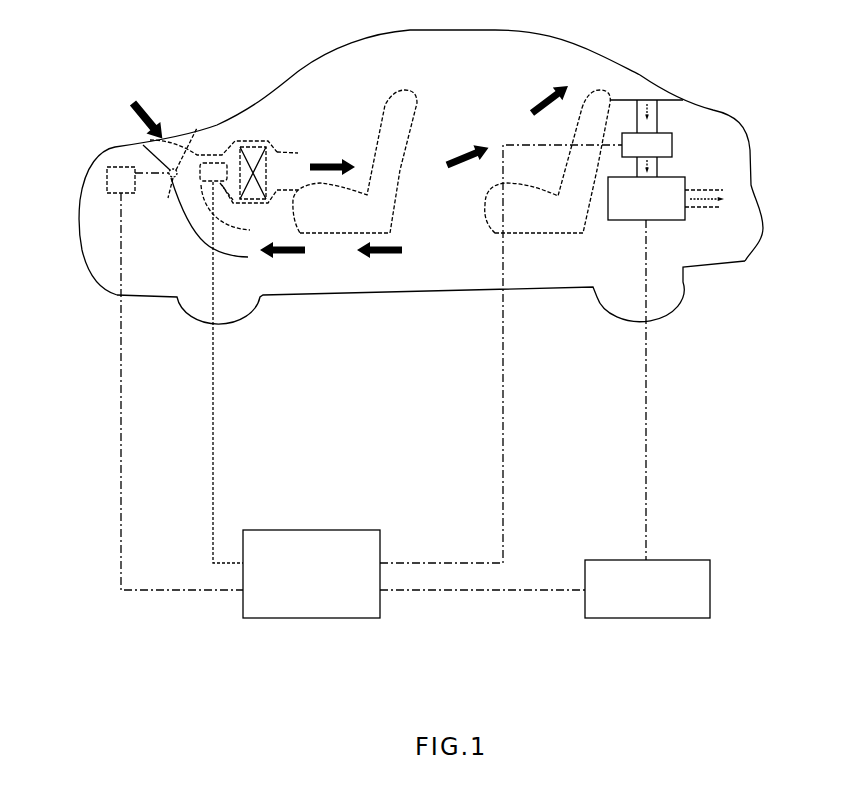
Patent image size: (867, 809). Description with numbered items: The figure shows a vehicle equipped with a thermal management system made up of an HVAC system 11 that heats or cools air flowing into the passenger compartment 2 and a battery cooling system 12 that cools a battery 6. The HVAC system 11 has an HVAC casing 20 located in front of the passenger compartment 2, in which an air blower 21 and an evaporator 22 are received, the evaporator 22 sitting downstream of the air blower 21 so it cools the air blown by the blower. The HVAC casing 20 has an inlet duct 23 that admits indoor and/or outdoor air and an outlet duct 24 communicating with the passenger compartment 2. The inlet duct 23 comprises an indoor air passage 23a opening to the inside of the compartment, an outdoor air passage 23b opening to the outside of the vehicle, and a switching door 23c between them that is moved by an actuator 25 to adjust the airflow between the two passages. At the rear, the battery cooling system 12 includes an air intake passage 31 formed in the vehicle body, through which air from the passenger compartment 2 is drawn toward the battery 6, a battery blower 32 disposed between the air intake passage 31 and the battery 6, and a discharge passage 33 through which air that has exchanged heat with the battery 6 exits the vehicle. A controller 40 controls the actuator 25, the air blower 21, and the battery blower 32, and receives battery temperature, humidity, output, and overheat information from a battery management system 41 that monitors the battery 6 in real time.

The passenger compartment 2 is at (463, 206).
The battery 6 is at (685, 178).
The HVAC system 11 is at (218, 124).
The battery cooling system 12 is at (686, 90).
The HVAC casing 20 is at (266, 141).
The air blower 21 is at (216, 162).
The evaporator 22 is at (262, 139).
The inlet duct 23 is at (158, 213).
The indoor air passage 23a is at (197, 237).
The outdoor air passage 23b is at (197, 127).
The switching door 23c is at (143, 145).
The outlet duct 24 is at (290, 153).
The actuator 25 is at (107, 182).
The air intake passage 31 is at (645, 98).
The battery blower 32 is at (673, 140).
The discharge passage 33 is at (700, 208).
The controller 40 is at (302, 620).
The battery management system 41 is at (640, 620).